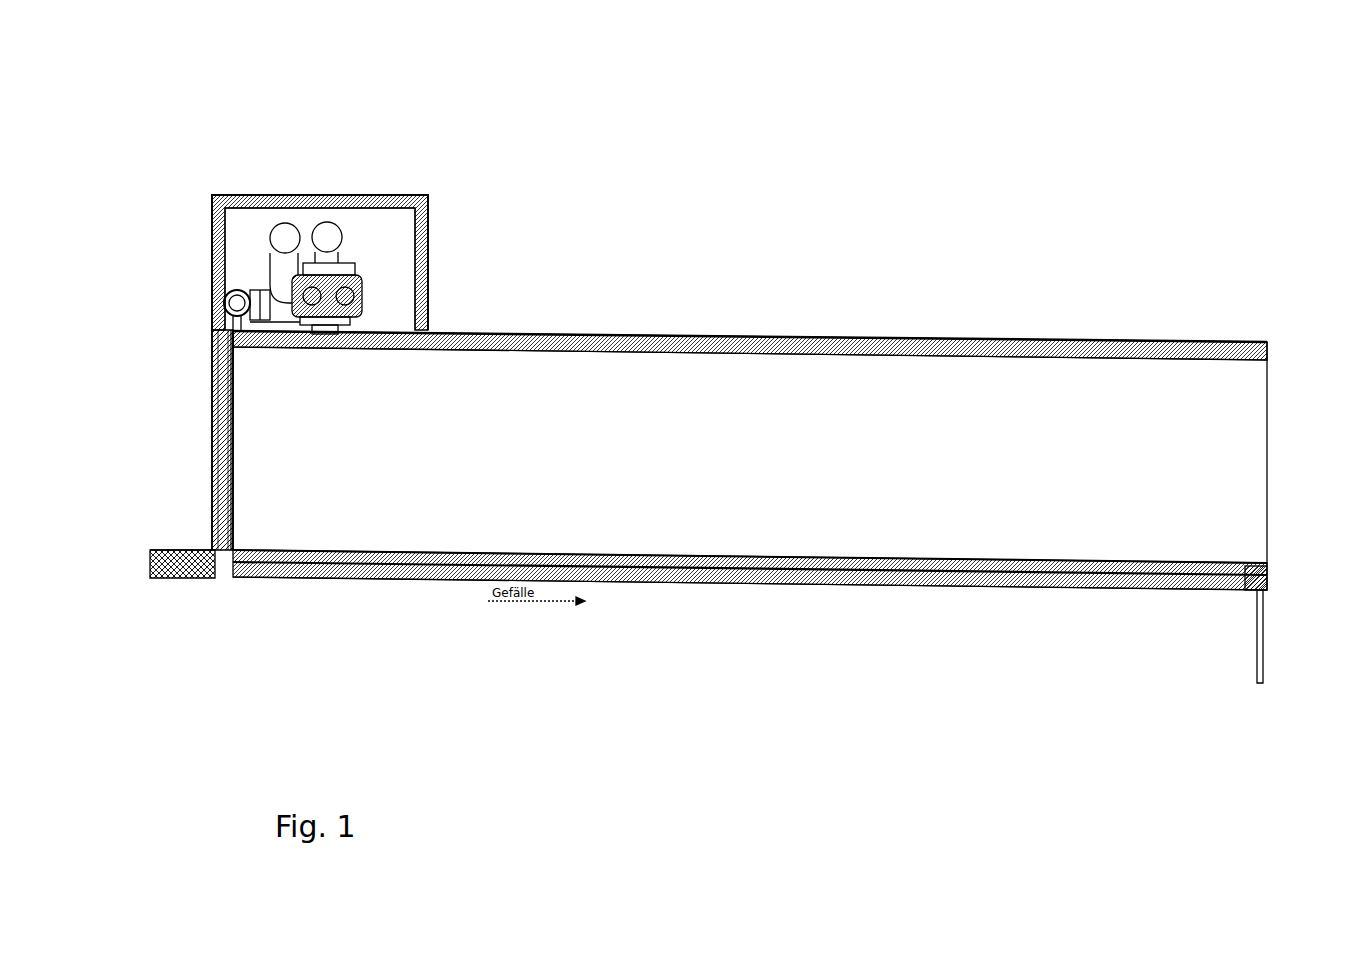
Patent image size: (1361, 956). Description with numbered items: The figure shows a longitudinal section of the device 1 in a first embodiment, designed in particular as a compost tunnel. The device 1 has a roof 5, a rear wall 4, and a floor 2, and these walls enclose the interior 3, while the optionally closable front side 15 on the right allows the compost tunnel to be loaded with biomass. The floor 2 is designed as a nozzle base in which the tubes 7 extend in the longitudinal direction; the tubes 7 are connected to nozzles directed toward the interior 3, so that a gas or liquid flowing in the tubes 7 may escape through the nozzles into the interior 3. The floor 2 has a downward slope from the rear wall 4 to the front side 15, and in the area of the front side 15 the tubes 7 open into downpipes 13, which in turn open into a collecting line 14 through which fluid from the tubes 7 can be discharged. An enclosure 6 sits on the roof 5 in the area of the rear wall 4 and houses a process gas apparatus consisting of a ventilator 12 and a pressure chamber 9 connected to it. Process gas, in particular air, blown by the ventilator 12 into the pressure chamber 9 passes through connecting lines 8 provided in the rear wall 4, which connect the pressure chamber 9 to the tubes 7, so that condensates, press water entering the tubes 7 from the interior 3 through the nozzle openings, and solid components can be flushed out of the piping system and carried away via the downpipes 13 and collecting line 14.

The device 1 is at (818, 255).
The floor 2 is at (403, 575).
The interior 3 is at (755, 461).
The rear wall 4 is at (233, 497).
The roof 5 is at (495, 343).
The enclosure 6 is at (397, 195).
The tubes 7 is at (803, 567).
The connecting lines 8 is at (233, 462).
The pressure chamber 9 is at (237, 290).
The ventilator 12 is at (330, 217).
The downpipes 13 is at (1257, 613).
The collecting line 14 is at (1257, 680).
The front side 15 is at (1292, 422).